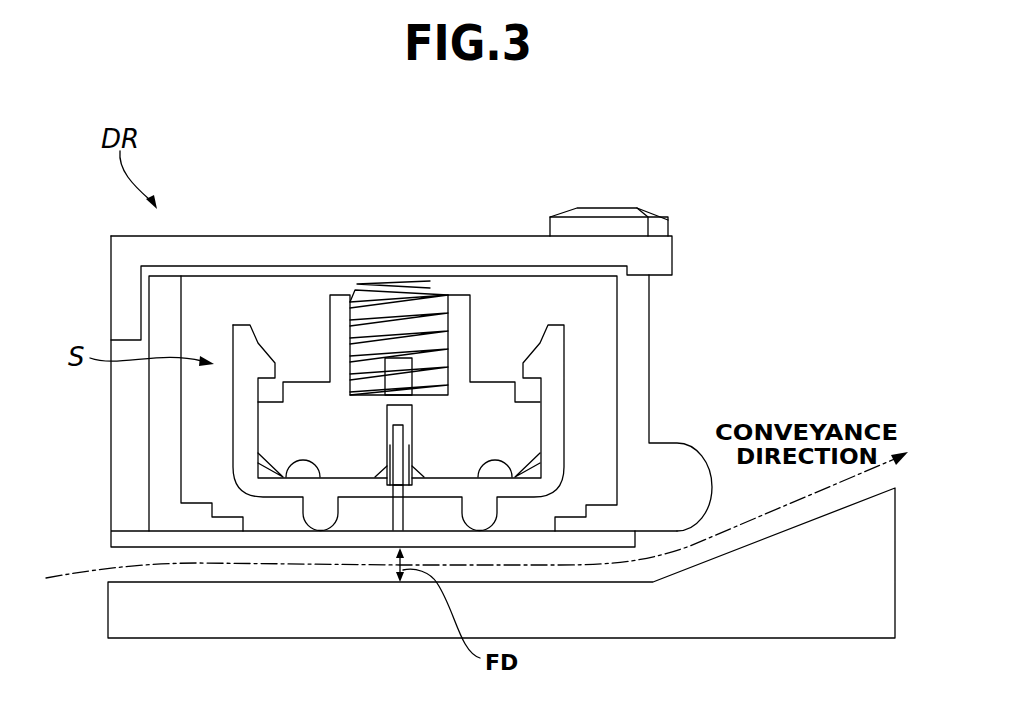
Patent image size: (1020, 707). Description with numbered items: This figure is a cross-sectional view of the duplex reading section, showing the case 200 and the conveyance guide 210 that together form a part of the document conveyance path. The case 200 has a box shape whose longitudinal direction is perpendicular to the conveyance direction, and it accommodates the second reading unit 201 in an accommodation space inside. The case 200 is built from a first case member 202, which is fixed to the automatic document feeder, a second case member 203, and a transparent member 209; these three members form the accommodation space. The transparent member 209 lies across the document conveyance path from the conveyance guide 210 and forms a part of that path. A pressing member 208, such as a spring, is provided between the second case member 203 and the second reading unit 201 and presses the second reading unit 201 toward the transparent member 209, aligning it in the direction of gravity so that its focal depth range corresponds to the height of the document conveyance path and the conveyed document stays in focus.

The case 200 is at (481, 222).
The second reading unit 201 is at (488, 382).
The first case member 202 is at (651, 361).
The second case member 203 is at (253, 236).
The pressing member 208 is at (417, 281).
The transparent member 209 is at (262, 530).
The conveyance guide 210 is at (176, 583).